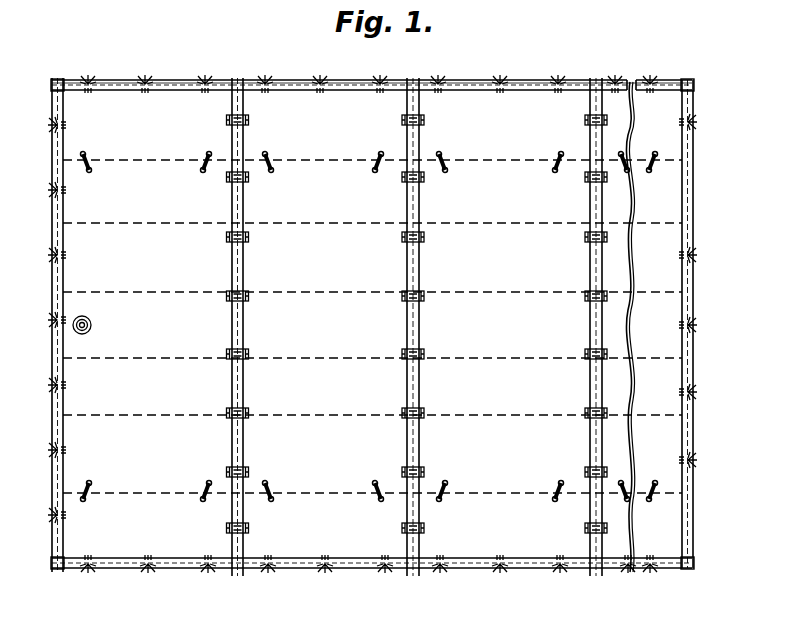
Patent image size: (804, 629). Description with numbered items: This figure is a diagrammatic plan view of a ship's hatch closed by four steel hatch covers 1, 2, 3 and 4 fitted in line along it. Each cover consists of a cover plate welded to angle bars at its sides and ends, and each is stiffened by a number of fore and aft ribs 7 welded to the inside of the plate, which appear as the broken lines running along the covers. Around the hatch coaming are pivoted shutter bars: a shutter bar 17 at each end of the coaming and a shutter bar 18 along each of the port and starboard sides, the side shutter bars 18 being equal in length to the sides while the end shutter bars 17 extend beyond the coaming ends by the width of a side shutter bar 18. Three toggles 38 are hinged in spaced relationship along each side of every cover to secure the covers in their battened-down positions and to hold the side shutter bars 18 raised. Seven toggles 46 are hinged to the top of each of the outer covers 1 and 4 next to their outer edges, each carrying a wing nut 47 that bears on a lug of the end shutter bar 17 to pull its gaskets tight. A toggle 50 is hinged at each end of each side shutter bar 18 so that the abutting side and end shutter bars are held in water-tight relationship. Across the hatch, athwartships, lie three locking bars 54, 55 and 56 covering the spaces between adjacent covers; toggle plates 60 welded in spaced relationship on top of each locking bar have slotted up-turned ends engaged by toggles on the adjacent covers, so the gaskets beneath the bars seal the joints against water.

The hatch cover 1 is at (168, 112).
The hatch cover 2 is at (290, 108).
The hatch cover 3 is at (545, 105).
The hatch cover 4 is at (612, 110).
The fore and aft ribs 7 is at (510, 159).
The shutter bar 17 is at (63, 374).
The shutter bar 18 is at (358, 80).
The toggles 38 is at (92, 80).
The toggles 46 is at (694, 122).
The wing nut 47 is at (694, 327).
The toggle 50 is at (55, 79).
The locking bar 54 is at (243, 320).
The locking bar 55 is at (420, 328).
The locking bar 56 is at (590, 327).
The toggle plates 60 is at (422, 235).